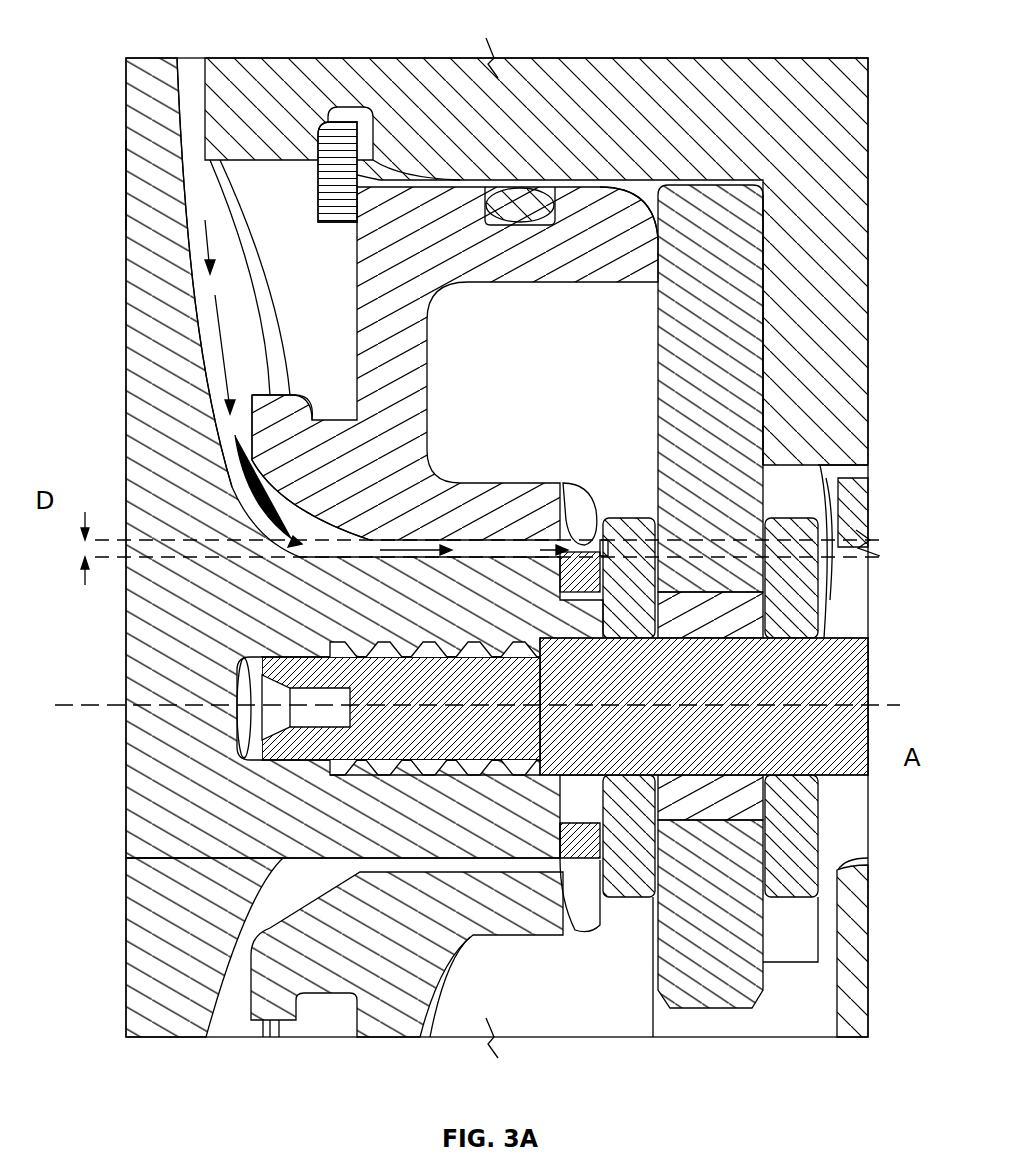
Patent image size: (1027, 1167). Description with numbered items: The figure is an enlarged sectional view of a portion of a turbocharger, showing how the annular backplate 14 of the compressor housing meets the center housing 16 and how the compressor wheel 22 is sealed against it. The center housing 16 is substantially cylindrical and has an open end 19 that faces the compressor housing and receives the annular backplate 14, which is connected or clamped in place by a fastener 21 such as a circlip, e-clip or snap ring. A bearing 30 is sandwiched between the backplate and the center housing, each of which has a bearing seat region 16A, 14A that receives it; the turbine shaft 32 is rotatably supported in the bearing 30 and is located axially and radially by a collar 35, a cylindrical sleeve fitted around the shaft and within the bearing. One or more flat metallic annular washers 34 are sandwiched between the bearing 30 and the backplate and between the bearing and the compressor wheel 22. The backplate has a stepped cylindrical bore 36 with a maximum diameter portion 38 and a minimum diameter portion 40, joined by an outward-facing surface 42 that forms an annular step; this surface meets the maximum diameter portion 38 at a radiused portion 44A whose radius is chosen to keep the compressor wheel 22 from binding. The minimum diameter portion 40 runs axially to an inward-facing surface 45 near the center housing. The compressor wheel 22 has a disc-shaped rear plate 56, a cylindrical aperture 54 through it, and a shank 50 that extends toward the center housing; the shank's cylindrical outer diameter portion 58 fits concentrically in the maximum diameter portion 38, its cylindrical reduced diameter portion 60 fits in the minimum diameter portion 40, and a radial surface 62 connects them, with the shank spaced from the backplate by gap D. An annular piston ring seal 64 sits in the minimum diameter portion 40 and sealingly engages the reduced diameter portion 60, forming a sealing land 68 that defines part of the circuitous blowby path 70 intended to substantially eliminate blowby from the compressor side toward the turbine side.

The annular backplate 14 is at (372, 200).
The bearing seat region 14A is at (660, 253).
The center housing 16 is at (792, 72).
The bearing seat region 16A is at (767, 267).
The open end 19 is at (200, 100).
The fastener 21 is at (338, 118).
The compressor wheel 22 is at (150, 452).
The bearing 30 is at (747, 327).
The turbine shaft 32 is at (868, 668).
The annular washers 34 is at (790, 535).
The collar 35 is at (845, 575).
The stepped cylindrical bore 36 is at (358, 418).
The maximum diameter portion 38 is at (375, 535).
The minimum diameter portion 40 is at (585, 560).
The outward-facing surface 42 is at (575, 560).
The radiused portion 44A is at (474, 530).
The inward-facing surface 45 is at (595, 575).
The shank 50 is at (278, 709).
The cylindrical aperture 54 is at (270, 1037).
The disc-shaped rear plate 56 is at (150, 185).
The cylindrical outer diameter portion 58 is at (305, 697).
The cylindrical reduced diameter portion 60 is at (560, 836).
The radial surface 62 is at (345, 712).
The annular piston ring seal 64 is at (640, 612).
The sealing land 68 is at (413, 786).
The circuitous blowby path 70 is at (212, 318).